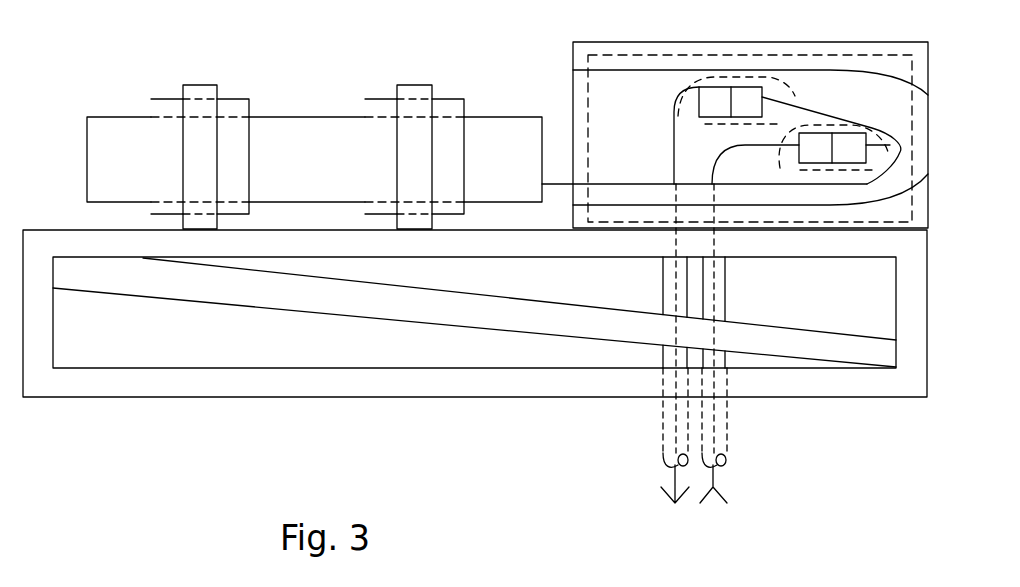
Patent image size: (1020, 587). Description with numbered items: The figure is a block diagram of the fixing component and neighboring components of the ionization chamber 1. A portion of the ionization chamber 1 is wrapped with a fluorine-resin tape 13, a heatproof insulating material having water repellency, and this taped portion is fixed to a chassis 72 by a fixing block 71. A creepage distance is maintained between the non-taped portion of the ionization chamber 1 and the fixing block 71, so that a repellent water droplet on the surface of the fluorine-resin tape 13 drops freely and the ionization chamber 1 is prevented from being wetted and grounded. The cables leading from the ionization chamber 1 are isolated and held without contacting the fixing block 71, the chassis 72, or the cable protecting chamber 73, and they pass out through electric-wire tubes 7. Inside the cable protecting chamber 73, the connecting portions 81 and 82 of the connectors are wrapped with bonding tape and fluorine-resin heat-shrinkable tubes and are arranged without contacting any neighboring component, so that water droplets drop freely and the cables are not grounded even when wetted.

The ionization chamber 1 is at (100, 117).
The fluorine-resin tape 13 is at (153, 99).
The fixing block 71 is at (400, 86).
The chassis 72 is at (928, 277).
The cable protecting chamber 73 is at (928, 140).
The electric-wire tubes 7 is at (662, 276).
The connecting portion 81 is at (700, 117).
The connecting portion 82 is at (782, 150).